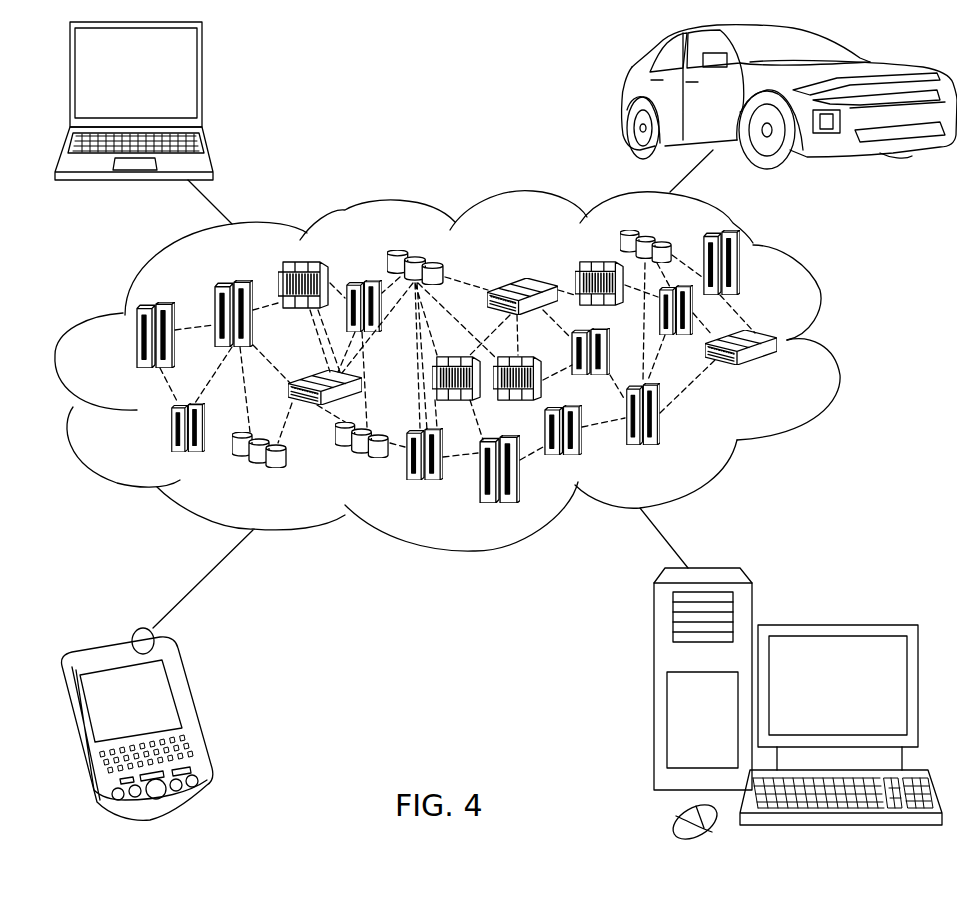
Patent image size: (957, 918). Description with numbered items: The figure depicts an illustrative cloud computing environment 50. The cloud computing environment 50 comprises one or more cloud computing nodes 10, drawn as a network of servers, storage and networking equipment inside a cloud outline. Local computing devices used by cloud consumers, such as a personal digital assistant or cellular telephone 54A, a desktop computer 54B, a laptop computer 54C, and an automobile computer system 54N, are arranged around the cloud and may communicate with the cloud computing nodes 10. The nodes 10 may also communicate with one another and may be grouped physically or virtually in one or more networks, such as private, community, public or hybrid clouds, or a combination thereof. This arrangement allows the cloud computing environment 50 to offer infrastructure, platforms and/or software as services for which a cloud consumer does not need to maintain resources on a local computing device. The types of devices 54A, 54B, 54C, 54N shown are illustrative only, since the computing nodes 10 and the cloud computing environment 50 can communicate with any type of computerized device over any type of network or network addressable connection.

The cloud computing node 10 is at (474, 371).
The cloud computing environment 50 is at (840, 337).
The personal digital assistant or cellular telephone 54A is at (194, 715).
The desktop computer 54B is at (836, 623).
The laptop computer 54C is at (202, 80).
The automobile computer system 54N is at (622, 92).